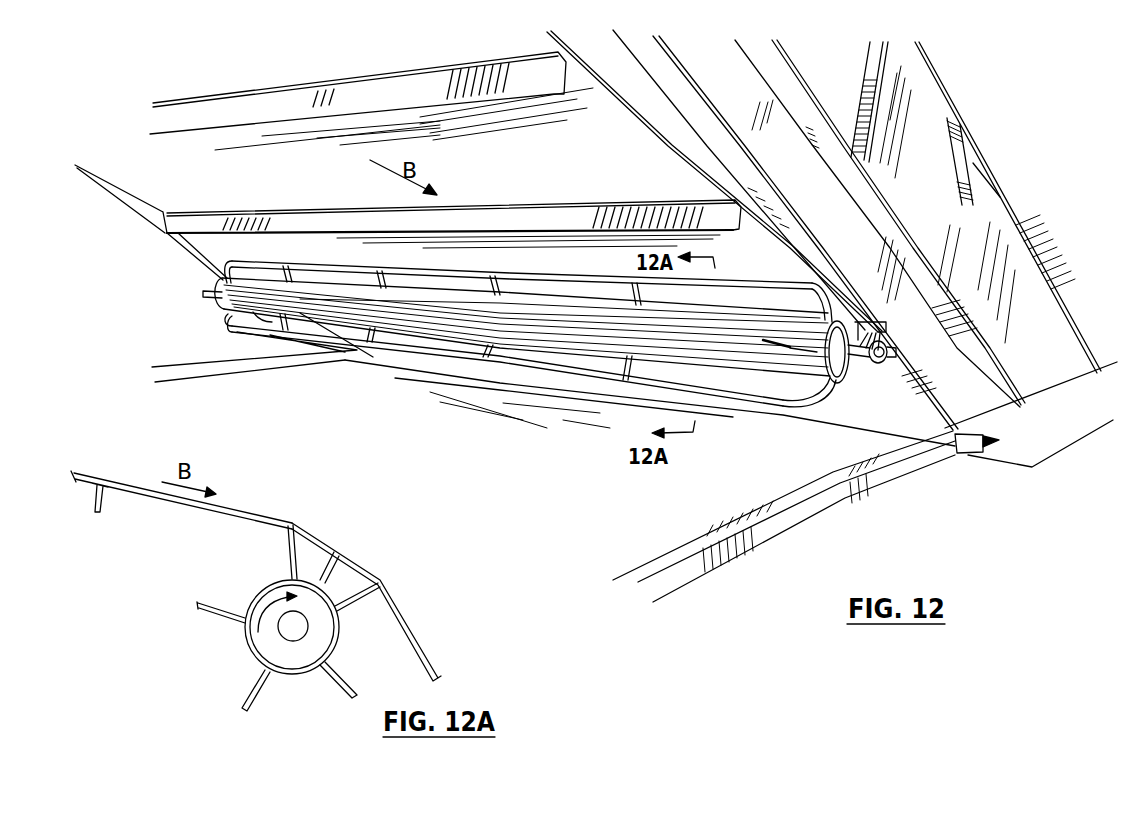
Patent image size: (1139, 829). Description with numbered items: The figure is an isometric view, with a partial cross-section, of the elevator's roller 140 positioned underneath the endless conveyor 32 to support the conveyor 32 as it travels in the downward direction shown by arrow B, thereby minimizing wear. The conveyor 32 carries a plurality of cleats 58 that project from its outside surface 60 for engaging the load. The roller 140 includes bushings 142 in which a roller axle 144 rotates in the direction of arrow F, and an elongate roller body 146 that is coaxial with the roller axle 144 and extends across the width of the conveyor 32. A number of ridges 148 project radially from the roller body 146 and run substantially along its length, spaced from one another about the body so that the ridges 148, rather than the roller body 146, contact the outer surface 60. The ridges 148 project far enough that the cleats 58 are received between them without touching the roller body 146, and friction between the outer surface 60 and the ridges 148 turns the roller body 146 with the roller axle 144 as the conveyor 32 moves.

In FIG. 12, the conveyor 32 is at (623, 81).
In FIG. 12A, the conveyor 32 is at (137, 499).
In FIG. 12, the cleats 58 is at (697, 202).
In FIG. 12A, the cleats 58 is at (327, 573).
In FIG. 12, the outside surface 60 is at (596, 186).
In FIG. 12A, the outside surface 60 is at (262, 525).
In FIG. 12, the roller 140 is at (214, 311).
In FIG. 12A, the roller 140 is at (282, 645).
In FIG. 12, the bushings 142 is at (883, 340).
In FIG. 12, the roller axle 144 is at (856, 366).
In FIG. 12A, the roller axle 144 is at (300, 638).
In FIG. 12, the roller body 146 is at (832, 388).
In FIG. 12A, the roller body 146 is at (340, 632).
In FIG. 12, the ridges 148 is at (245, 337).
In FIG. 12A, the ridges 148 is at (285, 571).